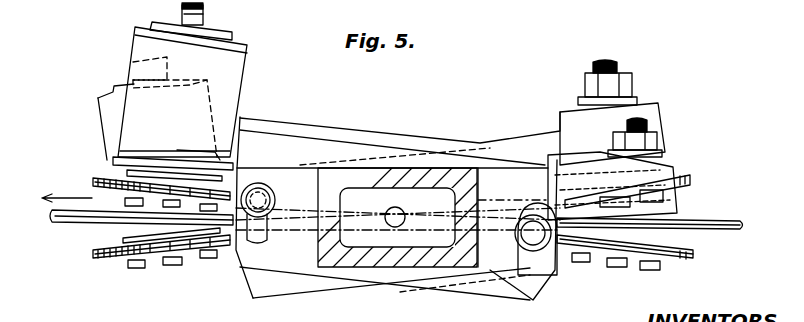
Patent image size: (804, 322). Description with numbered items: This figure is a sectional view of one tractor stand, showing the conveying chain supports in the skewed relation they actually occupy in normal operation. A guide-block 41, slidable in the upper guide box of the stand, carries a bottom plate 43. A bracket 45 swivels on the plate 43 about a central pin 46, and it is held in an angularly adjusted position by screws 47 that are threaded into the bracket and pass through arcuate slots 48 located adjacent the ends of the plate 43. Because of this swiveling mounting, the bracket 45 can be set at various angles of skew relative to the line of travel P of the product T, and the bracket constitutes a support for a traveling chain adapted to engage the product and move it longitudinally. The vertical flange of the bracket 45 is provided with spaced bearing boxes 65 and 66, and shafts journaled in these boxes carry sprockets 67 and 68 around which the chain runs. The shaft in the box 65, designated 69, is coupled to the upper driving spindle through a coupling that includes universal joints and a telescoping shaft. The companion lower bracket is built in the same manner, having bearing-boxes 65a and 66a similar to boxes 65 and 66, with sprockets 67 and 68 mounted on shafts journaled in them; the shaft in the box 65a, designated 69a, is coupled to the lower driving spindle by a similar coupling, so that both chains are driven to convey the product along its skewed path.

The guide-block 41 is at (422, 267).
The bottom plate 43 is at (293, 177).
The bracket 45 is at (257, 277).
The central pin 46 is at (397, 206).
The screws 47 is at (258, 192).
The arcuate slots 48 is at (263, 160).
The bearing box 65 is at (233, 63).
The bearing-box 65a is at (108, 110).
The bearing box 66 is at (677, 157).
The bearing-box 66a is at (643, 112).
The sprocket 67 is at (97, 177).
The sprocket 68 is at (683, 177).
The shaft 69 is at (203, 15).
The shaft 69a is at (130, 70).
The line of travel P is at (497, 207).
The product T is at (67, 222).